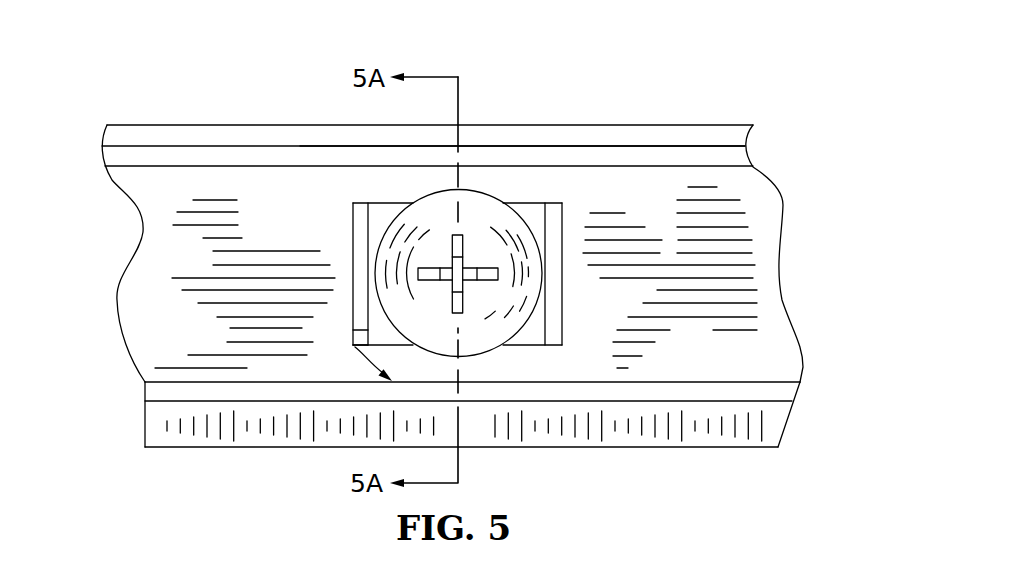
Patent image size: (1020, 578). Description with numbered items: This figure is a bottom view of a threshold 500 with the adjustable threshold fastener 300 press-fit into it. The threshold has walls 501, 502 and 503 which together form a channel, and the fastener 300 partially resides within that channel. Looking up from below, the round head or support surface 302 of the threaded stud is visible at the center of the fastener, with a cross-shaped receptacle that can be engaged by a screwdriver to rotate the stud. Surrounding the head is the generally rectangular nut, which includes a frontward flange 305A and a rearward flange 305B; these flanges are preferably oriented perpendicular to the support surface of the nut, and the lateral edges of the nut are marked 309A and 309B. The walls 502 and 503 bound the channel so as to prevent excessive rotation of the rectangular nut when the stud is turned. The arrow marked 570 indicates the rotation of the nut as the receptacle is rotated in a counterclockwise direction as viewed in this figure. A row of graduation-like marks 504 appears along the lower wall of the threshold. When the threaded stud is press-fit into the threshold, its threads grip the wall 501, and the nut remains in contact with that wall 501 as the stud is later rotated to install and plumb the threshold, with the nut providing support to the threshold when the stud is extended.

The adjustable threshold fastener 300 is at (240, 76).
The head or support surface 302 is at (480, 213).
The frontward flange 305A is at (570, 305).
The rearward flange 305B is at (353, 332).
The first flange 309A is at (562, 250).
The second flange 309B is at (353, 295).
The threshold 500 is at (680, 36).
The wall 501 is at (167, 252).
The wall 502 is at (633, 158).
The wall 503 is at (722, 392).
The graduation marks 504 is at (280, 428).
The rotation of the nut 570 is at (360, 356).